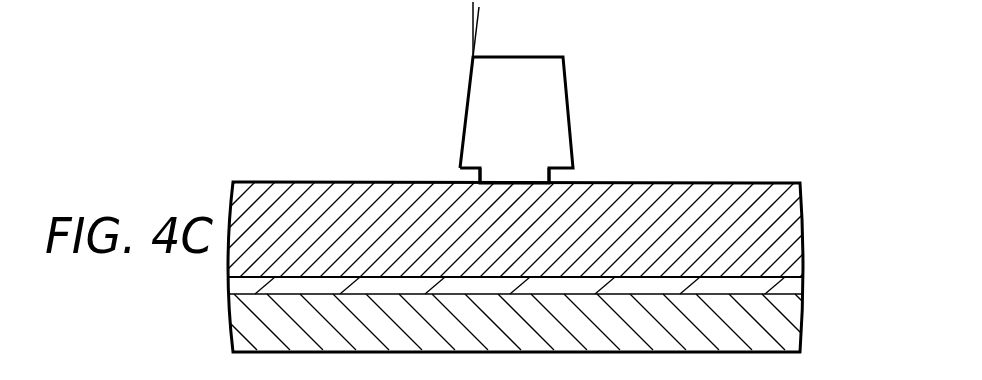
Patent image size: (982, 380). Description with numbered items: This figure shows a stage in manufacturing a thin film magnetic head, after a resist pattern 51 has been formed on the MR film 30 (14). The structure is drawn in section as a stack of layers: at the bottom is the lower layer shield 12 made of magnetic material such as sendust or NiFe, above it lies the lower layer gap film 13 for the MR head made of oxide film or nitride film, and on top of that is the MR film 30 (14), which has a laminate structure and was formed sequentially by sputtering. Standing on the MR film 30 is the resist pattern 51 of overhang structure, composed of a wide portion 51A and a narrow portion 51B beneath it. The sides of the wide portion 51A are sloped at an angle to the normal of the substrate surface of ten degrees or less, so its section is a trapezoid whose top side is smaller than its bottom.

The MR film 30 is at (527, 267).
The MR film 14 is at (800, 240).
The lower layer gap film 13 is at (790, 288).
The lower layer shield 12 is at (790, 327).
The resist pattern 51 is at (589, 120).
The wide portion 51A is at (557, 95).
The narrow portion 51B is at (545, 170).